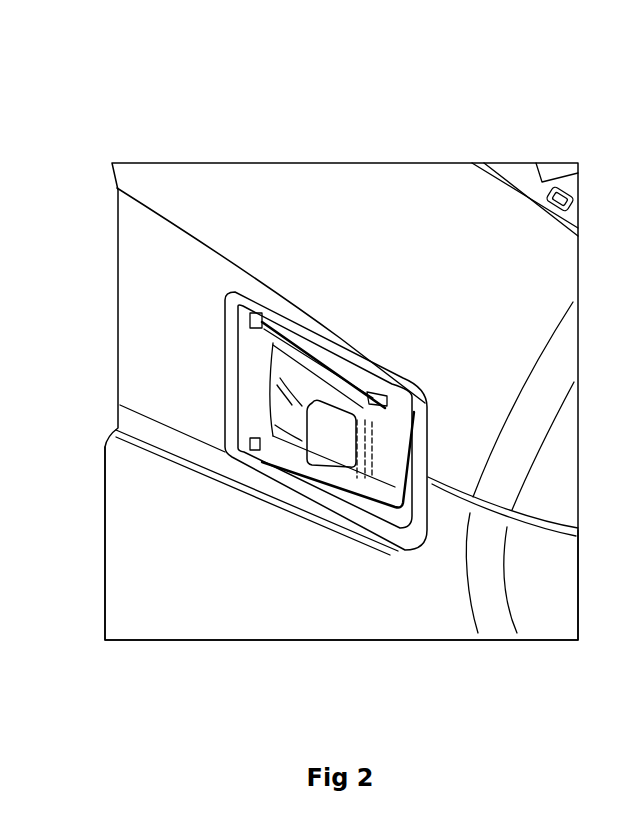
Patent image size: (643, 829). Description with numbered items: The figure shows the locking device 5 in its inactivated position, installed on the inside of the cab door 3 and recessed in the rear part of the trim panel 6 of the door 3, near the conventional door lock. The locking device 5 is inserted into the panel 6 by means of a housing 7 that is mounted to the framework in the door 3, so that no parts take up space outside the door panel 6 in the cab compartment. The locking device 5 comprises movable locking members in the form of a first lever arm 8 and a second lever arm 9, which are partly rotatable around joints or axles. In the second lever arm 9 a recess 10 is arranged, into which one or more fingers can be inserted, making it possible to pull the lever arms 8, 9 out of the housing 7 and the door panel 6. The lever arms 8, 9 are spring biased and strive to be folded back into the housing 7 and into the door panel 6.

The cab door 3 is at (319, 190).
The locking device 5 is at (176, 308).
The trim panel 6 is at (196, 572).
The housing 7 is at (150, 438).
The first lever arm 8 is at (328, 360).
The second lever arm 9 is at (390, 457).
The recess 10 is at (334, 437).